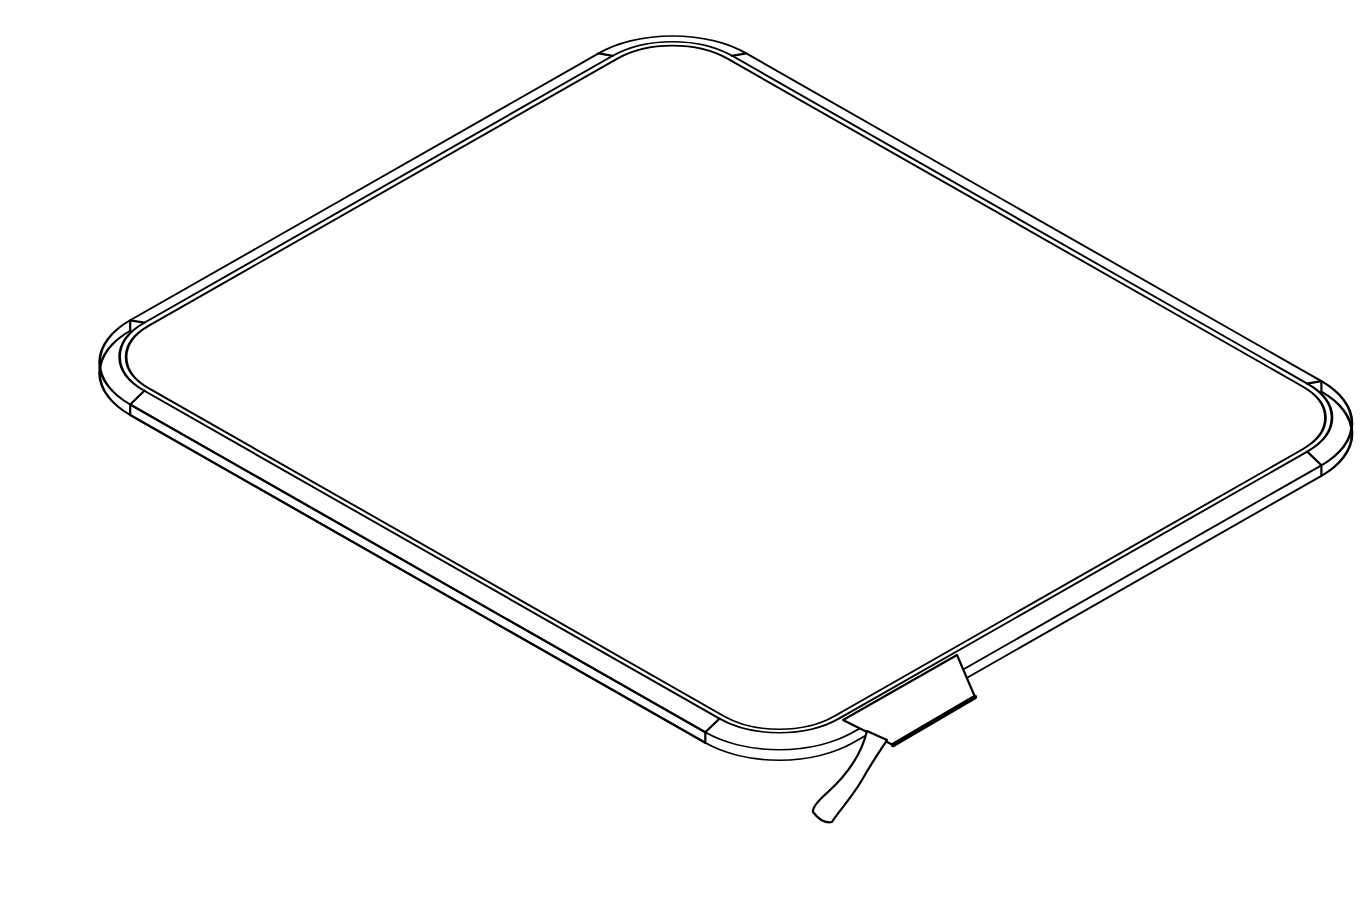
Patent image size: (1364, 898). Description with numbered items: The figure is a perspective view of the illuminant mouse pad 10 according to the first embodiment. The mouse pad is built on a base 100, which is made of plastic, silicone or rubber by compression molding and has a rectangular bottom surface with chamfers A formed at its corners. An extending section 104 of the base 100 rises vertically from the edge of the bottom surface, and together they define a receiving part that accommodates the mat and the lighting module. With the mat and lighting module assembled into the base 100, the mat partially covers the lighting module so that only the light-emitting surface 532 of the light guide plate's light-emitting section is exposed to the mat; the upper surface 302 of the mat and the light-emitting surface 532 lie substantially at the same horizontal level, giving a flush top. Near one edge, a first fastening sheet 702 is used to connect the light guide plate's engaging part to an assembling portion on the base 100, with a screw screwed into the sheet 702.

The illuminant mouse pad 10 is at (294, 83).
The base 100 is at (388, 563).
The extending section 104 is at (485, 597).
The upper surface 302 is at (352, 262).
The light-emitting surface 532 is at (240, 273).
The first fastening sheet 702 is at (928, 705).
The chamfers A is at (110, 396).